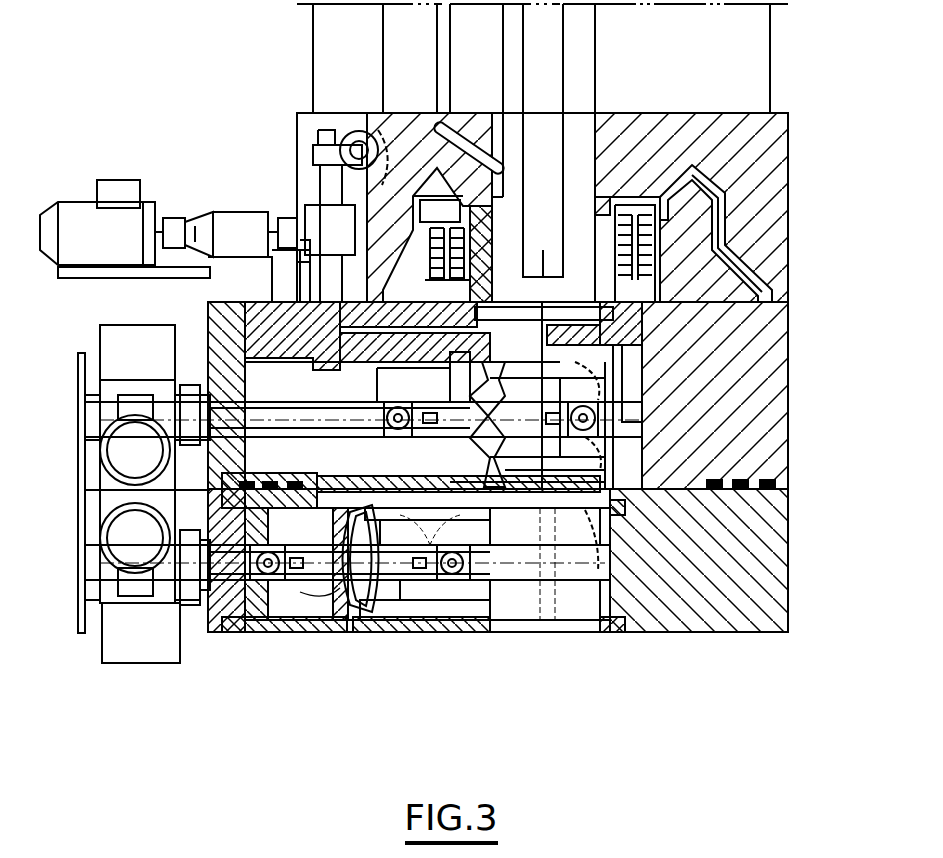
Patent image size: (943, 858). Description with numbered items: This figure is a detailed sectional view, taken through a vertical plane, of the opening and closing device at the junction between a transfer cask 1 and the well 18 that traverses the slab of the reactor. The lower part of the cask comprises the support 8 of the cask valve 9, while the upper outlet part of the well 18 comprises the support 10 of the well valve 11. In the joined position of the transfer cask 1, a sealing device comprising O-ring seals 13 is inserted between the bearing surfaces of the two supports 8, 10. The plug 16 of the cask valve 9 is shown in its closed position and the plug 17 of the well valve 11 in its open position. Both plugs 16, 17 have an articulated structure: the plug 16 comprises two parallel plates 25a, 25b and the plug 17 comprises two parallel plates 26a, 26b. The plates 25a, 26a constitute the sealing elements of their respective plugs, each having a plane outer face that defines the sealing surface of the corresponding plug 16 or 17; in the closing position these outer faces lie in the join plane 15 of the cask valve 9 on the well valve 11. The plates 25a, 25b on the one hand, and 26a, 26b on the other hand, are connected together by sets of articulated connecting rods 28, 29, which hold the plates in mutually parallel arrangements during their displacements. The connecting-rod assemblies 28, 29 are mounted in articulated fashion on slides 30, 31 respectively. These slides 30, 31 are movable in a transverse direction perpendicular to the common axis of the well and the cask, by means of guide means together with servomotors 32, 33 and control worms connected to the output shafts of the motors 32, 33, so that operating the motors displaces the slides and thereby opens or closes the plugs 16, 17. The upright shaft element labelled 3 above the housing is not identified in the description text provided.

The transfer cask 1 is at (773, 44).
The rotary shaft 3 is at (583, 205).
The support of valve 8 is at (758, 333).
The cask valve 9 is at (790, 405).
The support of the valve 10 is at (718, 622).
The well valve 11 is at (790, 557).
The O-ring seals 13 is at (768, 480).
The join plane 15 is at (790, 482).
The plug of the cask valve 16 is at (558, 352).
The plug of the well valve 17 is at (320, 595).
The well 18 is at (560, 602).
The plate 25a is at (590, 600).
The plate 25b is at (640, 403).
The plate 26a is at (425, 602).
The plate 26b is at (445, 606).
The articulated connecting rods 28 is at (490, 455).
The articulated connecting rods 29 is at (360, 605).
The slide 30 is at (445, 415).
The slide 31 is at (268, 600).
The servomotor 32 is at (78, 368).
The servomotor 33 is at (76, 615).